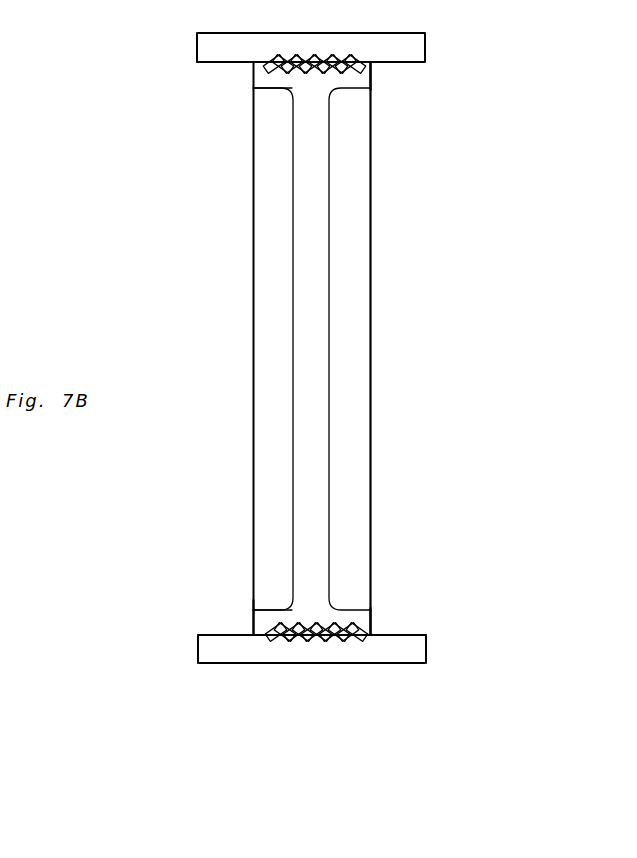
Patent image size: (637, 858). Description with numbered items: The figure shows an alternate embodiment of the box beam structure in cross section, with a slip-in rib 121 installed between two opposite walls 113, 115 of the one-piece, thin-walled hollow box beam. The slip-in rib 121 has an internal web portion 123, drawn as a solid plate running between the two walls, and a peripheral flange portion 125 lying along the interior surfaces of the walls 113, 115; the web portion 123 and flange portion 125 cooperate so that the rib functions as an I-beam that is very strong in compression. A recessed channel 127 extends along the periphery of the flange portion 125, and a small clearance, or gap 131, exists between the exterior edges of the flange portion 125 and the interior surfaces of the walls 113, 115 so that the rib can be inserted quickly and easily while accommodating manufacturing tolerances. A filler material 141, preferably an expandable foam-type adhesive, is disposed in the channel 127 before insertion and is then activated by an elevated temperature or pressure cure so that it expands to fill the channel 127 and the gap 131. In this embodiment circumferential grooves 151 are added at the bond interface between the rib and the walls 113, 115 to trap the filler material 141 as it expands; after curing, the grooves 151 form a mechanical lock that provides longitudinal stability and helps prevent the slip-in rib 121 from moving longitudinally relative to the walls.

The wall 113 is at (392, 663).
The wall 115 is at (375, 33).
The slip-in rib 121 is at (355, 407).
The web portion 123 is at (329, 322).
The flange portion 125 is at (253, 76).
The recessed channel 127 is at (268, 640).
The gap 131 is at (373, 64).
The filler material 141 is at (284, 78).
The circumferential grooves 151 is at (305, 60).